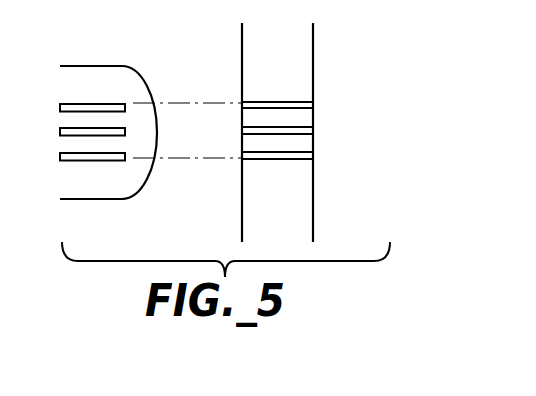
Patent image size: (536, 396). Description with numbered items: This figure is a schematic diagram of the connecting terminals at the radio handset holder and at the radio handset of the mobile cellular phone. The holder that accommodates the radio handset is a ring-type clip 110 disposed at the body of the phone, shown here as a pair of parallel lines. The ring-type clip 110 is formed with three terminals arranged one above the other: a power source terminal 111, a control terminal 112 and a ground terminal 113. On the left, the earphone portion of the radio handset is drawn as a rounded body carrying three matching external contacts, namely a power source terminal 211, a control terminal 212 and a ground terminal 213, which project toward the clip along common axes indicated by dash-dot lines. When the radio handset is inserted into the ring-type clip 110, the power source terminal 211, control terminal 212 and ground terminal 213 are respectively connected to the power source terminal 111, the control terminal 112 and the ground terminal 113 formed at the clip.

The ring-type clip 110 is at (303, 60).
The power source terminal 111 is at (303, 107).
The control terminal 112 is at (303, 132).
The ground terminal 113 is at (303, 157).
The power source terminal 211 is at (107, 103).
The control terminal 212 is at (120, 132).
The ground terminal 213 is at (113, 158).